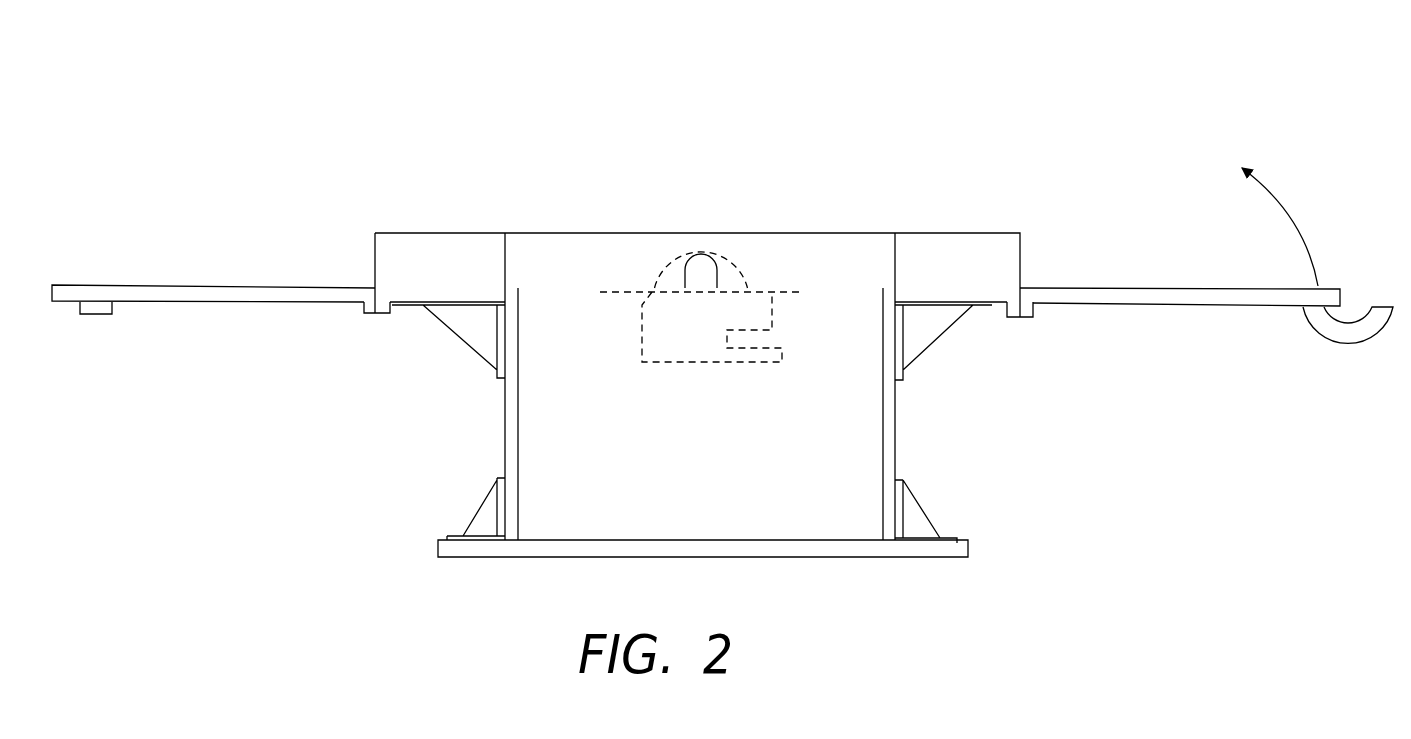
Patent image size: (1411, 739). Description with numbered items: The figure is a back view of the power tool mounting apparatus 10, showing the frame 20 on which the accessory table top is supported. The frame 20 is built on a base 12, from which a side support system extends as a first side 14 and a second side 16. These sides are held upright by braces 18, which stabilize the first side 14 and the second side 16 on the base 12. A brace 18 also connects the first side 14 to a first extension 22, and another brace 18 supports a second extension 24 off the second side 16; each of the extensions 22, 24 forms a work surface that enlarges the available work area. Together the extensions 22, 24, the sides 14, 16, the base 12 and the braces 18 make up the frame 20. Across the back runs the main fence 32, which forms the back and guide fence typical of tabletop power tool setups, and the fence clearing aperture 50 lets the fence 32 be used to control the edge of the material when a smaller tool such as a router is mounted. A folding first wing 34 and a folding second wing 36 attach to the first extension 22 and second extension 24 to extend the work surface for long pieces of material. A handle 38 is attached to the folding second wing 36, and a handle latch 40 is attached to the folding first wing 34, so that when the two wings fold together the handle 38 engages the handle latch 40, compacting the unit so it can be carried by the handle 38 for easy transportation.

The power tool mounting apparatus 10 is at (838, 82).
The base 12 is at (968, 547).
The first side 14 is at (505, 421).
The second side 16 is at (897, 425).
The braces 18 is at (450, 330).
The frame 20 is at (843, 598).
The first extension 22 is at (396, 306).
The second extension 24 is at (992, 308).
The main fence 32 is at (678, 233).
The folding first wing 34 is at (193, 286).
The folding second wing 36 is at (1082, 287).
The handle 38 is at (1323, 340).
The handle latch 40 is at (112, 314).
The fence clearing aperture 50 is at (716, 258).